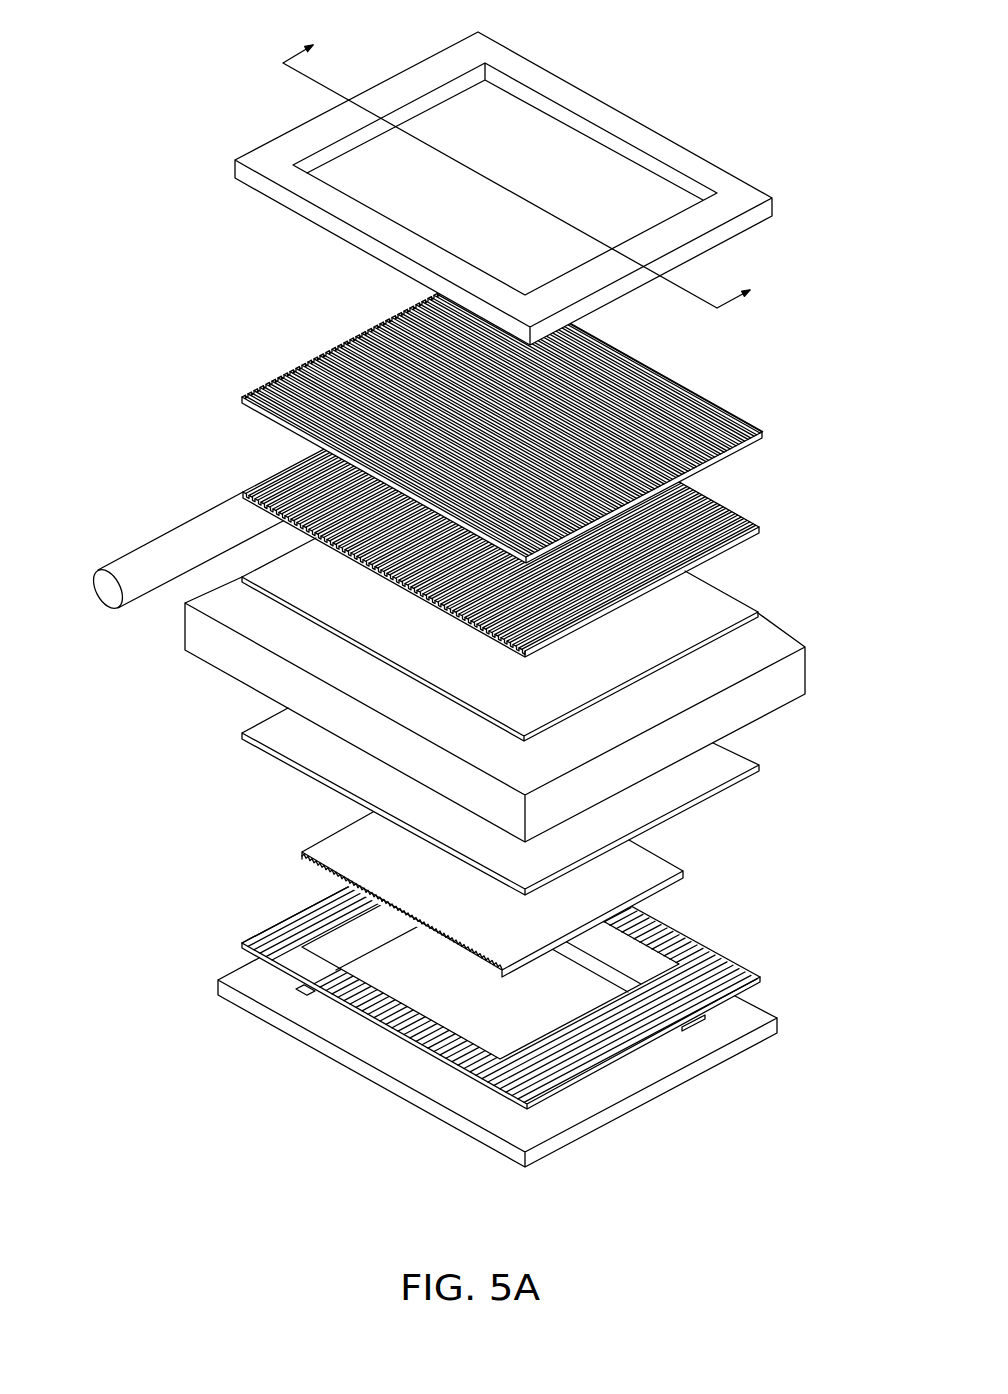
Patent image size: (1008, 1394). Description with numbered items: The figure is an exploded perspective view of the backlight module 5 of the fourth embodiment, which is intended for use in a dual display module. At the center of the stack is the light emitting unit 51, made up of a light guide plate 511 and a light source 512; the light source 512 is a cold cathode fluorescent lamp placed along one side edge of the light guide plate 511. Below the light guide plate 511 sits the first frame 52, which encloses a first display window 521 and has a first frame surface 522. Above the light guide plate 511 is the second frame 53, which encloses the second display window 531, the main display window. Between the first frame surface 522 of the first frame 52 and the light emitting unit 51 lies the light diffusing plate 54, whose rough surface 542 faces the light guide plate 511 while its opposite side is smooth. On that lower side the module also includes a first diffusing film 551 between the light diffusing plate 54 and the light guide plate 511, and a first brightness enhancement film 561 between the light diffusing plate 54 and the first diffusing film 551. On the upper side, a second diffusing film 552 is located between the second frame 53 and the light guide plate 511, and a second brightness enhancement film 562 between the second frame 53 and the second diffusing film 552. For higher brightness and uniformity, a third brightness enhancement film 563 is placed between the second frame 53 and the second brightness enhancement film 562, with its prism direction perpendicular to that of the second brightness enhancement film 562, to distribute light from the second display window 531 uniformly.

The backlight module 5 is at (806, 26).
The second frame 53 is at (537, 188).
The second display window 531 is at (652, 198).
The third brightness enhancement film 563 is at (762, 435).
The second brightness enhancement film 562 is at (762, 530).
The second diffusing film 552 is at (762, 612).
The first diffusing film 551 is at (762, 775).
The light emitting unit 51 is at (433, 667).
The light guide plate 511 is at (220, 653).
The light source 512 is at (135, 600).
The first brightness enhancement film 561 is at (683, 870).
The light diffusing plate 54 is at (543, 965).
The rough surface 542 is at (753, 972).
The first frame 52 is at (536, 1062).
The first display window 521 is at (548, 1102).
The first frame surface 522 is at (648, 1078).